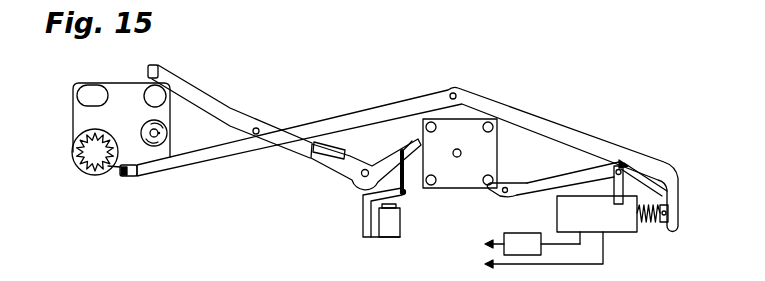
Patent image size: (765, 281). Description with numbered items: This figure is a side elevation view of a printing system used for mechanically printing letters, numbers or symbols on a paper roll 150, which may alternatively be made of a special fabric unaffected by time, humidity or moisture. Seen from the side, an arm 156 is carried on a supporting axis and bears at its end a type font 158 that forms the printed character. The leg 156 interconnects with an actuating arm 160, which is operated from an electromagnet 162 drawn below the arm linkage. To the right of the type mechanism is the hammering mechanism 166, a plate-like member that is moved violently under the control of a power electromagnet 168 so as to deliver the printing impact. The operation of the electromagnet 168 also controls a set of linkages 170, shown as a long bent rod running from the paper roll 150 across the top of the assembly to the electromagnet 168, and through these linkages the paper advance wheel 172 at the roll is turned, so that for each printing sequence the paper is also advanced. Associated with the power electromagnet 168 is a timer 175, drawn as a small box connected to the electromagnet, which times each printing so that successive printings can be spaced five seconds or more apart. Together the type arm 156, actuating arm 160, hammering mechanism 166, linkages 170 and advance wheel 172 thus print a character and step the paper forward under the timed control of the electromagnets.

The paper roll 150 is at (171, 104).
The arm 156 is at (226, 107).
The type font 158 is at (153, 63).
The actuating arm 160 is at (335, 165).
The electromagnet 162 is at (393, 228).
The hammering mechanism 166 is at (463, 128).
The electromagnet 168 is at (617, 227).
The linkages 170 is at (528, 108).
The paper advance wheel 172 is at (103, 176).
The timer 175 is at (514, 237).